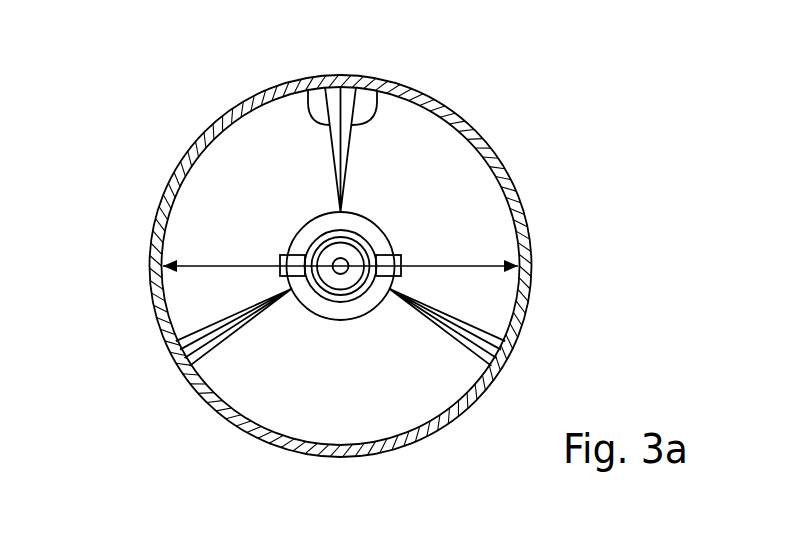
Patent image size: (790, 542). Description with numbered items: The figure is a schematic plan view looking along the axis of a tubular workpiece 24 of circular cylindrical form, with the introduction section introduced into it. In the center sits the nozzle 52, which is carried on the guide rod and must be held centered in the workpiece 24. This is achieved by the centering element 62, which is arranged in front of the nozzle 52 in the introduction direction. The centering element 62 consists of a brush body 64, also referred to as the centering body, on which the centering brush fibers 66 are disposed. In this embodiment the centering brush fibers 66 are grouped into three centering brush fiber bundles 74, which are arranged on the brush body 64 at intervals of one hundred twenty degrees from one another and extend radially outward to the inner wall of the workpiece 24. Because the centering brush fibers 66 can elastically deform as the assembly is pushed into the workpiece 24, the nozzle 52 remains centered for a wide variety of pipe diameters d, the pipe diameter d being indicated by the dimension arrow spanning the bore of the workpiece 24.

The workpiece 24 is at (155, 310).
The nozzle 52 is at (335, 297).
The centering element 62 is at (397, 286).
The brush body 64 is at (303, 233).
The centering brush fibers 66 is at (308, 90).
The centering brush fiber bundles 74 is at (375, 93).
The pipe diameter d is at (436, 262).